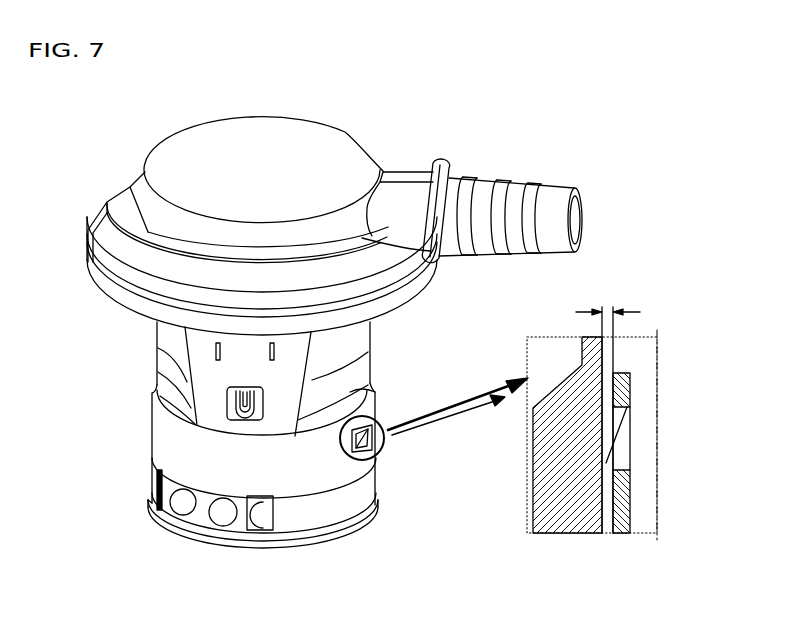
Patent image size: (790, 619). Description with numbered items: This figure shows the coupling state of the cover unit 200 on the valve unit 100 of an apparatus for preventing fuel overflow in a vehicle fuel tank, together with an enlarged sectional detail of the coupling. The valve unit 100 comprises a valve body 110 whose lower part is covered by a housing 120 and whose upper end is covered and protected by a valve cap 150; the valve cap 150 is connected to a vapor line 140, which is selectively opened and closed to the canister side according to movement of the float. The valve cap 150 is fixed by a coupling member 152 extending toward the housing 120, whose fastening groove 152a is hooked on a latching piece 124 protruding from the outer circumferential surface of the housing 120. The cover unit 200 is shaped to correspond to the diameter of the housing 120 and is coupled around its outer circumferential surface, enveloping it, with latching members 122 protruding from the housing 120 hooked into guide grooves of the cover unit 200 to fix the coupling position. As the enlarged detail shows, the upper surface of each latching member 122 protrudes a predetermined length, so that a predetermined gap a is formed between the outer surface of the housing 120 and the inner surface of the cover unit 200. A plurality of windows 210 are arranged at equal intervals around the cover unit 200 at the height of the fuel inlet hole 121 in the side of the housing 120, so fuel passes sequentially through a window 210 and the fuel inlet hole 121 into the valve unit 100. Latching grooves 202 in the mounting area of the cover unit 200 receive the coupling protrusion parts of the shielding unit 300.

The valve unit 100 is at (416, 323).
The valve body 110 is at (592, 352).
The housing 120 is at (353, 394).
The fuel inlet hole 121 is at (190, 497).
The latching member 122 is at (383, 437).
The latching piece 124 is at (253, 410).
The vapor line 140 is at (522, 183).
The valve cap 150 is at (357, 146).
The coupling member 152 is at (207, 382).
The fastening groove 152a is at (193, 417).
The cover unit 200 is at (375, 486).
The latching groove 202 is at (386, 454).
The window 210 is at (214, 523).
The shielding unit 300 is at (290, 528).